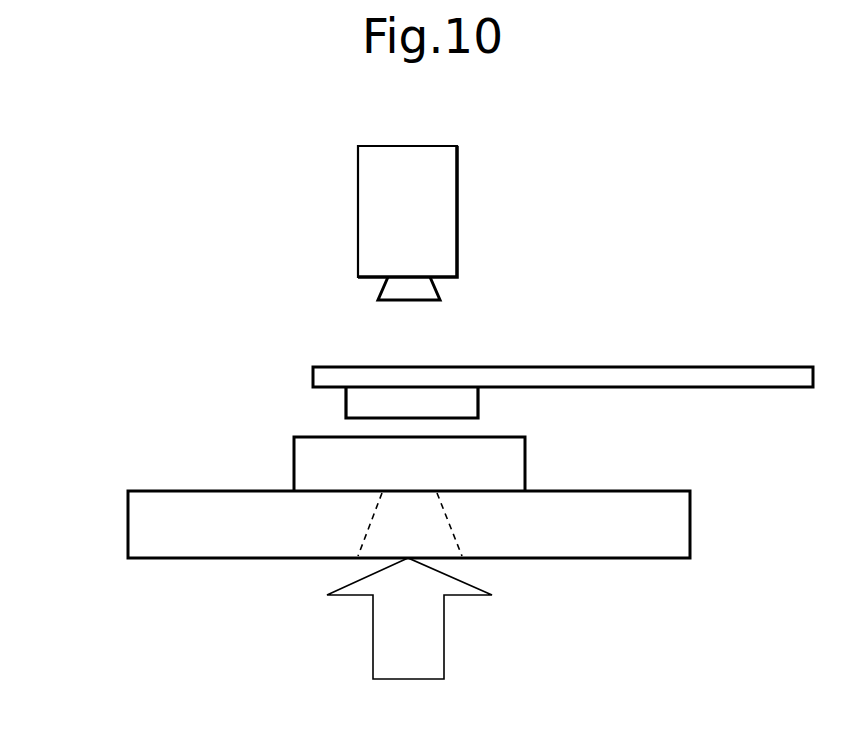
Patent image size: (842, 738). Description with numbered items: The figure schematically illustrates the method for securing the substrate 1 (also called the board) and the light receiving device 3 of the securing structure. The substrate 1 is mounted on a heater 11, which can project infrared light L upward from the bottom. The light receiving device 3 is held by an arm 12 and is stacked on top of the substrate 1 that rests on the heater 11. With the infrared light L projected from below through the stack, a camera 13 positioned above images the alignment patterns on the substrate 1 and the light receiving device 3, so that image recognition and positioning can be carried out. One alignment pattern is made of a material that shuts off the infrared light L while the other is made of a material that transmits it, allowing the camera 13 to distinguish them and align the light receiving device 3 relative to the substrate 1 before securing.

The camera 13 is at (457, 206).
The arm 12 is at (748, 370).
The light receiving device 3 is at (346, 406).
The substrate 1 is at (294, 462).
The heater 11 is at (120, 526).
The infrared light L is at (383, 637).